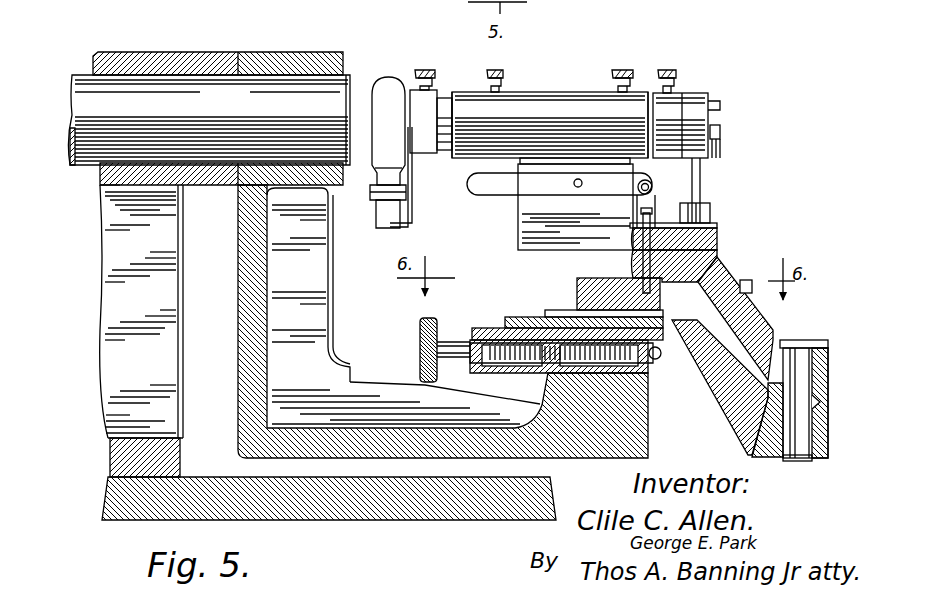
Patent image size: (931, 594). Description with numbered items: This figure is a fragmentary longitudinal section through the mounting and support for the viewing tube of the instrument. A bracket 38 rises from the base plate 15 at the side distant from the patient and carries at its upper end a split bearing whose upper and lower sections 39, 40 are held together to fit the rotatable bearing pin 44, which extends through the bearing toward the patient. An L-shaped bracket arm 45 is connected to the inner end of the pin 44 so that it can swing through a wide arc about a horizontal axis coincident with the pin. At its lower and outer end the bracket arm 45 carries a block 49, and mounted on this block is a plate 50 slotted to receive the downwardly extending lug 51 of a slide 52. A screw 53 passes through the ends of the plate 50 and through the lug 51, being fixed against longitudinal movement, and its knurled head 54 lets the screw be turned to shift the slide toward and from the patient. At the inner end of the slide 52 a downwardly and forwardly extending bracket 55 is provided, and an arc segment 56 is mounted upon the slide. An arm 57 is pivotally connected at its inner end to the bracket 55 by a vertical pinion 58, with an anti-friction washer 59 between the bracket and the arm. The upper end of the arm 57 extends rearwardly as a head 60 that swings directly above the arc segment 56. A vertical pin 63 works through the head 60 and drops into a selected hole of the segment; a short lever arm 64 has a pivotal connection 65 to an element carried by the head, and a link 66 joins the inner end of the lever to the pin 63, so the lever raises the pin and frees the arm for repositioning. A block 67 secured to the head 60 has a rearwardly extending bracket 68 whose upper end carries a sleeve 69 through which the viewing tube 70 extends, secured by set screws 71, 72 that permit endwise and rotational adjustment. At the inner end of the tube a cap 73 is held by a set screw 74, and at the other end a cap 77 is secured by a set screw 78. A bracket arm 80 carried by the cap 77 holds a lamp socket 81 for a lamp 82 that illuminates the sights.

The base plate 15 is at (110, 492).
The bracket 38 is at (141, 311).
The upper section of split bearing 39 is at (167, 60).
The lower section of split bearing 40 is at (100, 184).
The bearing pin 44 is at (209, 120).
The L-shaped bracket arm 45 is at (308, 285).
The block 49 is at (606, 413).
The plate 50 is at (559, 369).
The lug 51 is at (538, 330).
The slide 52 is at (485, 327).
The screw 53 is at (478, 368).
The knurled head 54 is at (422, 345).
The bracket 55 is at (730, 398).
The arc segment 56 is at (592, 288).
The arm 57 is at (750, 318).
The vertical pinion 58 is at (797, 413).
The anti-friction washer 59 is at (752, 418).
The head portion 60 is at (680, 270).
The vertical pin 63 is at (630, 250).
The short lever arm 64 is at (512, 183).
The pivotal connection 65 is at (576, 188).
The link 66 is at (642, 205).
The block 67 is at (718, 232).
The bracket 68 is at (572, 228).
The sleeve 69 is at (550, 128).
The viewing tube 70 is at (452, 112).
The set screw 71 is at (495, 70).
The set screw 72 is at (620, 70).
The cap 73 is at (665, 120).
The set screw 74 is at (680, 58).
The cap 77 is at (420, 107).
The set screw 78 is at (438, 55).
The bracket arm 80 is at (410, 219).
The lamp socket 81 is at (386, 191).
The lamp 82 is at (388, 131).